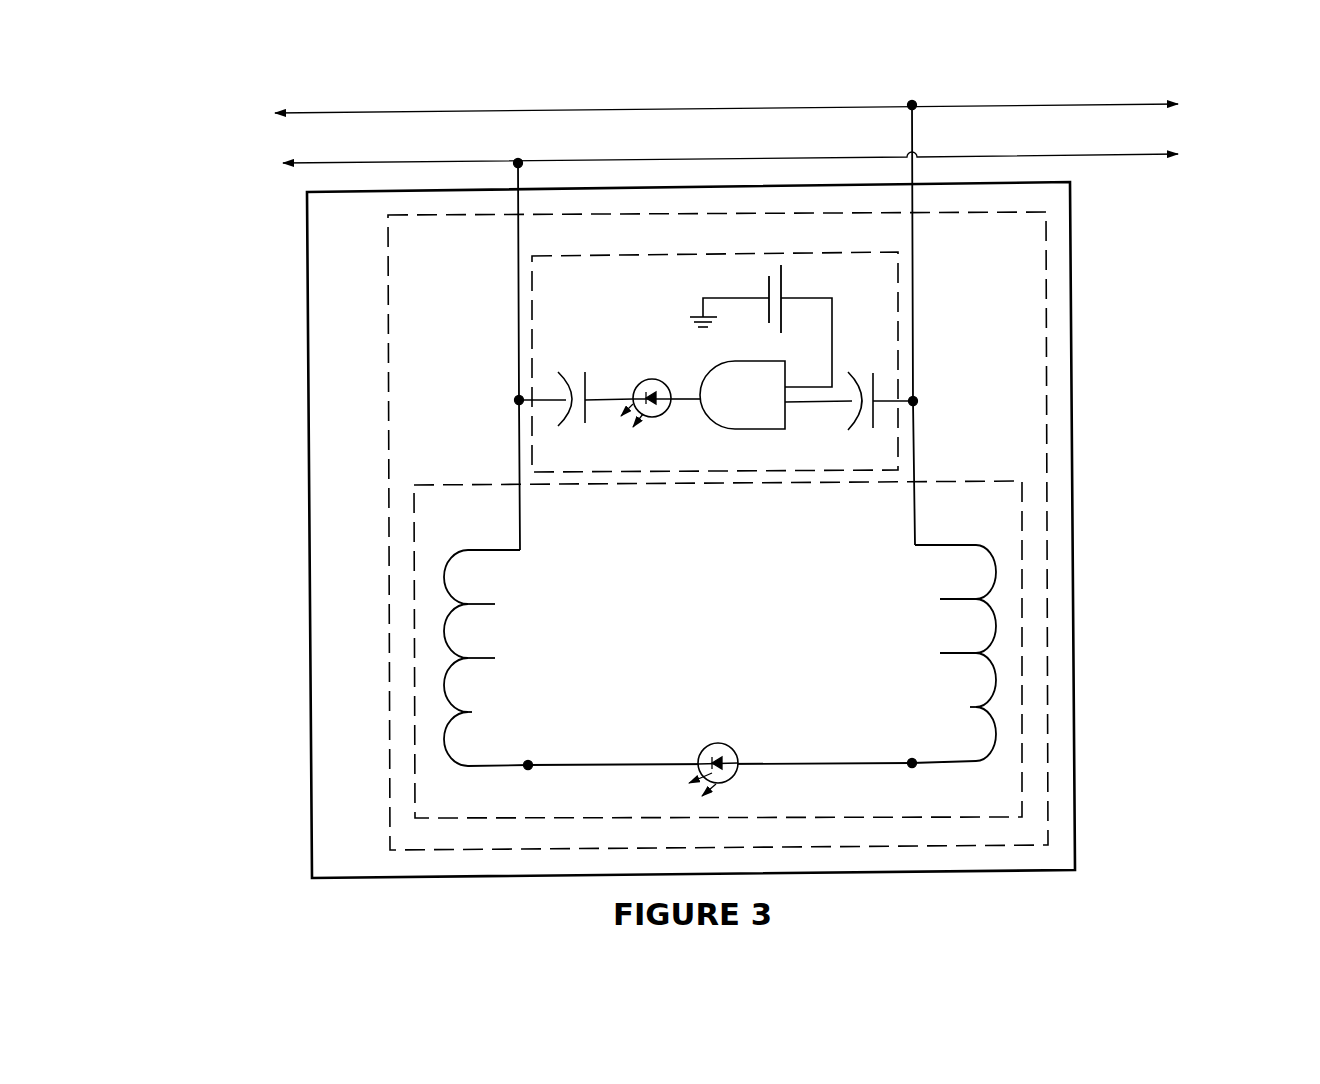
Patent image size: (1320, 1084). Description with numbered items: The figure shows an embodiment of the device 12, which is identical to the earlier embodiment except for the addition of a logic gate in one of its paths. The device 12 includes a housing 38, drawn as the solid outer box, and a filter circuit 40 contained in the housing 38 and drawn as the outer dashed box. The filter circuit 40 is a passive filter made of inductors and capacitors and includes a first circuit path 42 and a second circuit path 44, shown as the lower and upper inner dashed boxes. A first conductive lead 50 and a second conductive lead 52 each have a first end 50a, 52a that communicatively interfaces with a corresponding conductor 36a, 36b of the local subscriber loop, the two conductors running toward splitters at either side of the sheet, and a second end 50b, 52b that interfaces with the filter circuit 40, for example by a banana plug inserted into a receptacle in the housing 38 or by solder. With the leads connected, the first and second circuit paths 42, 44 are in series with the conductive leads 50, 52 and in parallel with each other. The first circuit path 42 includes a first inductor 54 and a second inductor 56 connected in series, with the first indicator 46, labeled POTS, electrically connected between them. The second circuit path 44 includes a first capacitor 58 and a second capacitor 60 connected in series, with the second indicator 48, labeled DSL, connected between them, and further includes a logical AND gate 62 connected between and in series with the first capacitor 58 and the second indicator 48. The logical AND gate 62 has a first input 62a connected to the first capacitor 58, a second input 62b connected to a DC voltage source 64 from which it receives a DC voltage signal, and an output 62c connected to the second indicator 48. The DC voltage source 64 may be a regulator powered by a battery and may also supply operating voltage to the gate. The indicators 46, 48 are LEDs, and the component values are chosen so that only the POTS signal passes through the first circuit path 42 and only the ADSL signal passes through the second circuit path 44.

The device 12 is at (220, 263).
The conductor of the local subscriber loop 36a is at (400, 152).
The conductor of the local subscriber loop 36b is at (393, 100).
The housing 38 is at (302, 343).
The filter circuit 40 is at (370, 387).
The first circuit path 42 is at (447, 477).
The second circuit path 44 is at (693, 243).
The first indicator 46 is at (758, 737).
The second indicator 48 is at (653, 427).
The first conductive lead 50 is at (510, 315).
The first end of the first conductive lead 50a is at (508, 147).
The second end of the first conductive lead 50b is at (508, 393).
The second conductive lead 52 is at (927, 310).
The first end of the second conductive lead 52a is at (897, 125).
The second end of the second conductive lead 52b is at (923, 388).
The first inductor 54 is at (920, 635).
The second inductor 56 is at (527, 640).
The first capacitor 58 is at (858, 363).
The second capacitor 60 is at (577, 367).
The logical AND gate 62 is at (760, 438).
The first input 62a is at (793, 412).
The second input 62b is at (793, 378).
The output 62c is at (687, 412).
The DC voltage source 64 is at (813, 283).